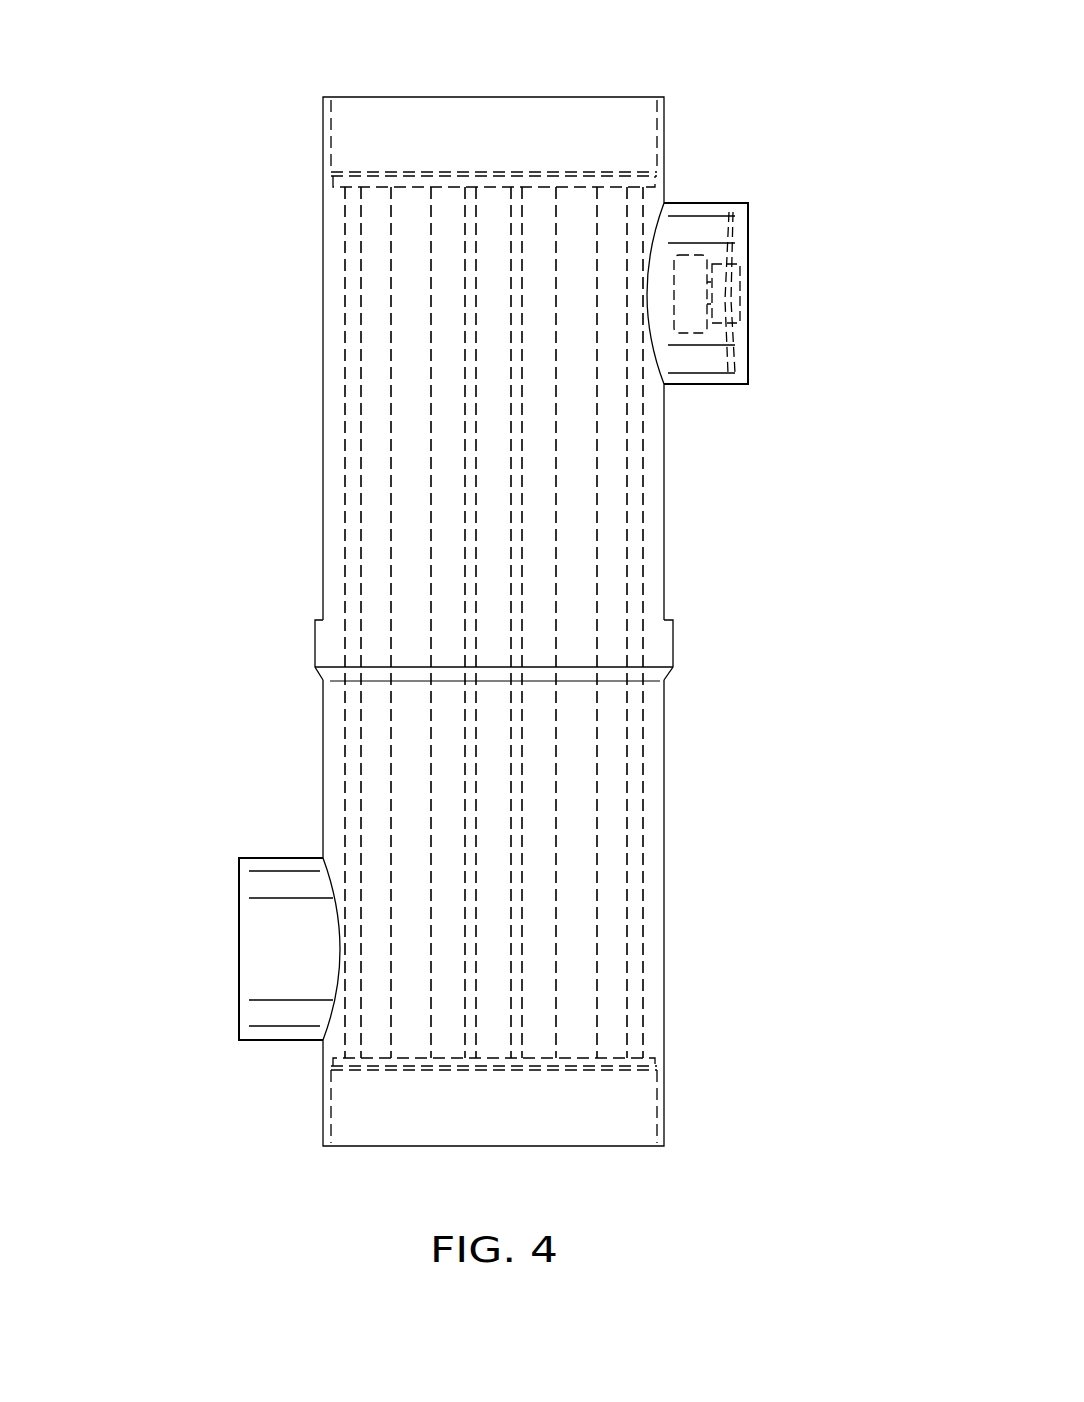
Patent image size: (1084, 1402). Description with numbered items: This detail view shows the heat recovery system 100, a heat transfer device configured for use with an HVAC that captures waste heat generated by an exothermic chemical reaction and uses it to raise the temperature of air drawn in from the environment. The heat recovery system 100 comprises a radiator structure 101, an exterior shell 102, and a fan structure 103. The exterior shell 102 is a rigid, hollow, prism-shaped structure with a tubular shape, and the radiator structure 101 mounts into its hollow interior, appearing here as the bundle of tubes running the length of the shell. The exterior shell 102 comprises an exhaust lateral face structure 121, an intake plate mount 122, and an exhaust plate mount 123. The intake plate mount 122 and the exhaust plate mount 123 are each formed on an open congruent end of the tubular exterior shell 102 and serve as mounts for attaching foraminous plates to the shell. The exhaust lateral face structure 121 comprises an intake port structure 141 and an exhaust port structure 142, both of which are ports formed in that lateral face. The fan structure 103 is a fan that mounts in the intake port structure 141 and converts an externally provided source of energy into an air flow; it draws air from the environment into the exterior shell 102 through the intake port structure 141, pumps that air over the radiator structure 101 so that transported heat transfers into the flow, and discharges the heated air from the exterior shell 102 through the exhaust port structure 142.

The heat recovery system 100 is at (160, 120).
The radiator structure 101 is at (405, 460).
The exterior shell 102 is at (915, 1185).
The fan structure 103 is at (694, 270).
The exhaust lateral face structure 121 is at (664, 790).
The intake plate mount 122 is at (603, 1146).
The exhaust plate mount 123 is at (595, 97).
The intake port structure 141 is at (720, 203).
The exhaust port structure 142 is at (282, 1040).